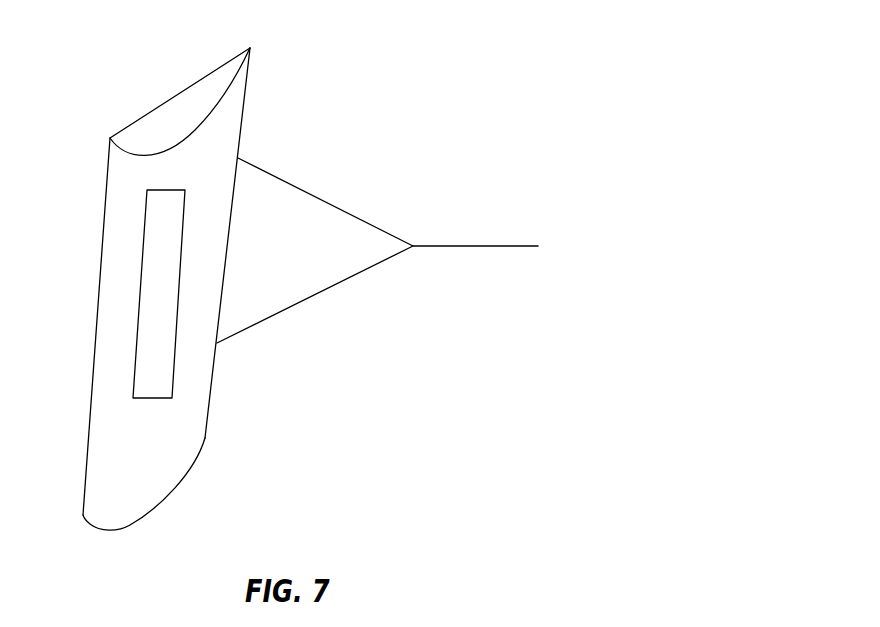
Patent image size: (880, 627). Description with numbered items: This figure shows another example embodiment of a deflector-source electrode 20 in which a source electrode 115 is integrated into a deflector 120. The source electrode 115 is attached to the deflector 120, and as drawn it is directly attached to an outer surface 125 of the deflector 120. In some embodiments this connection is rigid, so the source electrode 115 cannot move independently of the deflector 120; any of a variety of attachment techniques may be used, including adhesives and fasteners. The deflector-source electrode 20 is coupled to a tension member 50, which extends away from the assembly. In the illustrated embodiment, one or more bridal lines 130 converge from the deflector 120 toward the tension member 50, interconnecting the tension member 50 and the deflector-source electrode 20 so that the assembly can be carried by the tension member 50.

The deflector-source electrode 20 is at (284, 275).
The tension member 50 is at (475, 230).
The source electrode 115 is at (108, 294).
The deflector 120 is at (158, 101).
The outer surface 125 is at (143, 289).
The bridal lines 130 is at (315, 250).